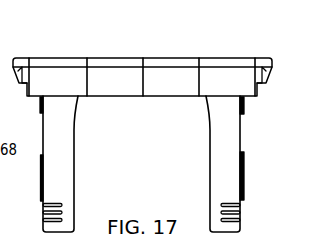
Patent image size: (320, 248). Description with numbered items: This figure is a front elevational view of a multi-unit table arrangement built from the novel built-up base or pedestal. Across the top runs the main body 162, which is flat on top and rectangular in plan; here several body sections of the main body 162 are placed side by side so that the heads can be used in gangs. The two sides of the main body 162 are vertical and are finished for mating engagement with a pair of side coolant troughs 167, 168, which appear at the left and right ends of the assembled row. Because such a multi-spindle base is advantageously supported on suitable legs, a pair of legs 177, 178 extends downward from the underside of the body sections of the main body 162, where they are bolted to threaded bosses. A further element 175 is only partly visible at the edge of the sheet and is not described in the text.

The main body 162 is at (97, 58).
The side coolant trough 167 is at (22, 58).
The side coolant trough 168 is at (264, 58).
The mounting post (partially shown) 175 is at (8, 116).
The leg 177 is at (73, 192).
The leg 178 is at (210, 176).